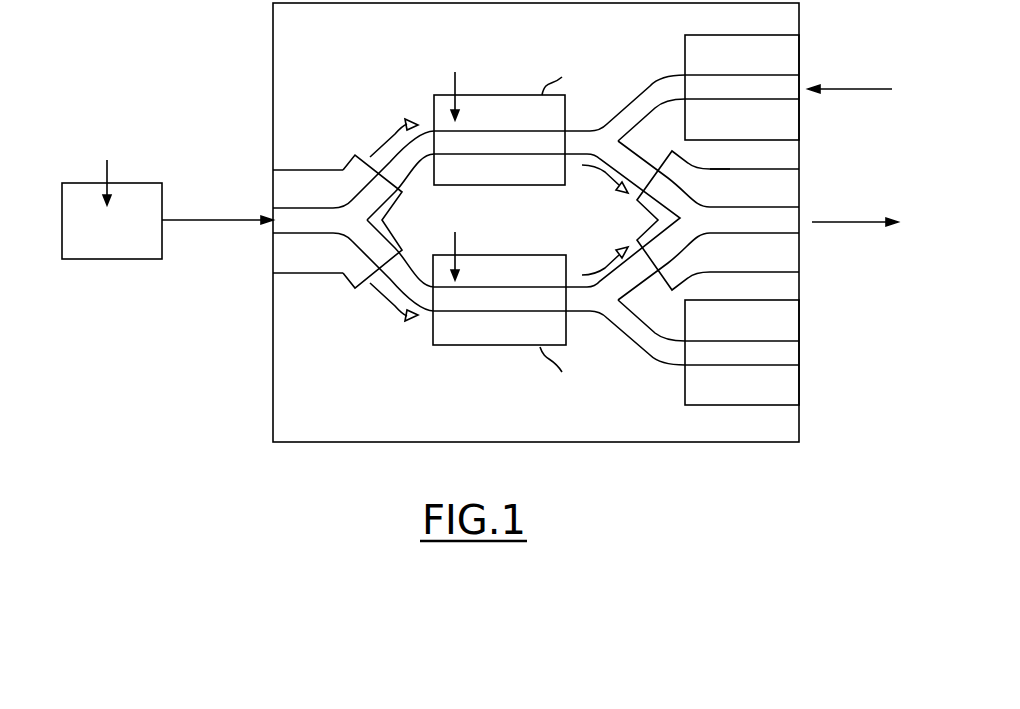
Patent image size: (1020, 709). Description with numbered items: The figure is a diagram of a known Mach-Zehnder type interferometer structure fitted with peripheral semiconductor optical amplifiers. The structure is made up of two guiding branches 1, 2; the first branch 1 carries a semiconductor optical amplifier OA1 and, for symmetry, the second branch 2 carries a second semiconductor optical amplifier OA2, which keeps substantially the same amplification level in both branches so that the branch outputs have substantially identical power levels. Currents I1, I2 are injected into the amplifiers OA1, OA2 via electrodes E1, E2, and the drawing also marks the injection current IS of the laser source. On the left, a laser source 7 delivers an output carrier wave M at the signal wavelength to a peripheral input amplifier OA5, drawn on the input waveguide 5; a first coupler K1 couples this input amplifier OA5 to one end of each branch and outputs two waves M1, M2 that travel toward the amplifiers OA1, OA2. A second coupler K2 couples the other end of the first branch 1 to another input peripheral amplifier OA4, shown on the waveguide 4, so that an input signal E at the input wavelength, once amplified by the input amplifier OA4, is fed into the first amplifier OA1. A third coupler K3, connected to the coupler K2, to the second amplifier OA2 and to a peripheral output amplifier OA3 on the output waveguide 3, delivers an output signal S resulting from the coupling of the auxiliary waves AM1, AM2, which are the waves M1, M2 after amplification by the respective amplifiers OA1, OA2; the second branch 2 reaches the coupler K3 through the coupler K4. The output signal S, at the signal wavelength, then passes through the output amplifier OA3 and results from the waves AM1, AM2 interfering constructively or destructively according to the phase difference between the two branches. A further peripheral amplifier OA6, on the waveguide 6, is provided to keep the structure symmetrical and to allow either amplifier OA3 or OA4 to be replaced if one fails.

The laser source 7 is at (62, 226).
The laser injection current IS is at (107, 169).
The output carrier wave M is at (217, 226).
The input waveguide 5 is at (303, 220).
The peripheral semiconductor optical amplifier (input amplifier) OA5 is at (308, 241).
The first coupler K1 is at (383, 221).
The wave output by the coupler K1 M1 is at (388, 129).
The wave output by the coupler K1 M2 is at (390, 310).
The first guiding branch 1 is at (499, 140).
The first semiconductor optical amplifier OA1 is at (499, 111).
The current I1 is at (455, 81).
The electrode E1 is at (564, 75).
The second guiding branch 2 is at (499, 300).
The second semiconductor optical amplifier OA2 is at (499, 334).
The current I2 is at (455, 241).
The electrode E2 is at (561, 378).
The second coupler K2 is at (650, 153).
The fourth coupler K4 is at (650, 287).
The auxiliary wave AM1 is at (600, 189).
The auxiliary wave AM2 is at (597, 254).
The third coupler K3 is at (718, 220).
The output waveguide 3 is at (754, 220).
The peripheral semiconductor optical amplifier (output amplifier) OA3 is at (738, 159).
The input waveguide for signal E 4 is at (742, 87).
The input peripheral semiconductor optical amplifier OA4 is at (742, 55).
The waveguide 6 is at (742, 352).
The peripheral amplifier OA6 is at (742, 323).
The input signal E is at (850, 97).
The output signal S is at (855, 232).